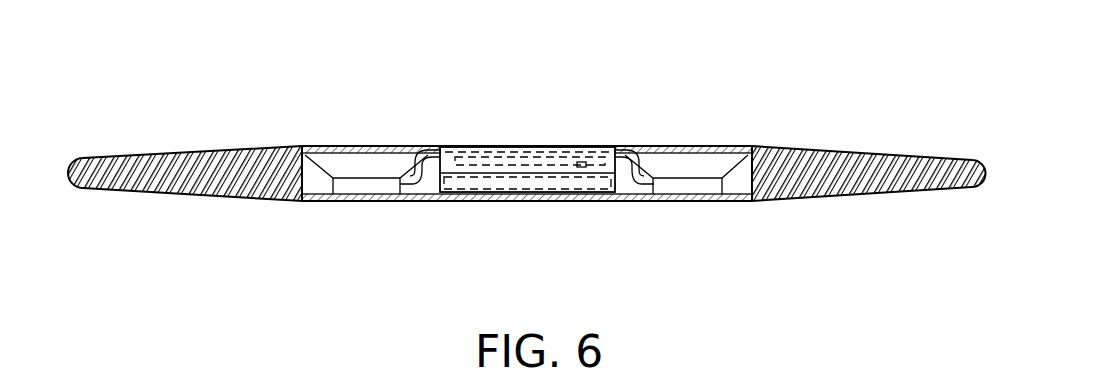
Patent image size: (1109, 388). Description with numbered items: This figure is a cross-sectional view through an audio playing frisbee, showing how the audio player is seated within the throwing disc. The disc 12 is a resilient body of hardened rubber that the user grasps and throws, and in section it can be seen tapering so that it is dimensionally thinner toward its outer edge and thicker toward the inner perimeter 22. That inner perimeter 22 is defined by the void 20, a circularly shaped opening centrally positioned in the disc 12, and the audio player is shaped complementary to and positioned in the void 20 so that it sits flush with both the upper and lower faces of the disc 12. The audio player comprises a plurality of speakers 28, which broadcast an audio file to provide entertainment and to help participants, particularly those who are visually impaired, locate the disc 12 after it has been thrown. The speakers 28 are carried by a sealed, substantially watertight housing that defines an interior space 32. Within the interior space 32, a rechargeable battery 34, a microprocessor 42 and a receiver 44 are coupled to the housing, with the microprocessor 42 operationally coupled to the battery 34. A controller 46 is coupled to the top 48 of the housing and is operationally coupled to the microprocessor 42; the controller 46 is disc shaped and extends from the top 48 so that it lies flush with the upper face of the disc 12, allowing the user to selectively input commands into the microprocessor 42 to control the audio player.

The disc 12 is at (800, 156).
The void 20 is at (318, 195).
The inner perimeter 22 is at (749, 147).
The speakers 28 is at (683, 180).
The interior space 32 is at (414, 175).
The battery 34 is at (543, 147).
The microprocessor 42 is at (507, 147).
The receiver 44 is at (585, 147).
The controller 46 is at (470, 147).
The top of the housing 48 is at (673, 153).